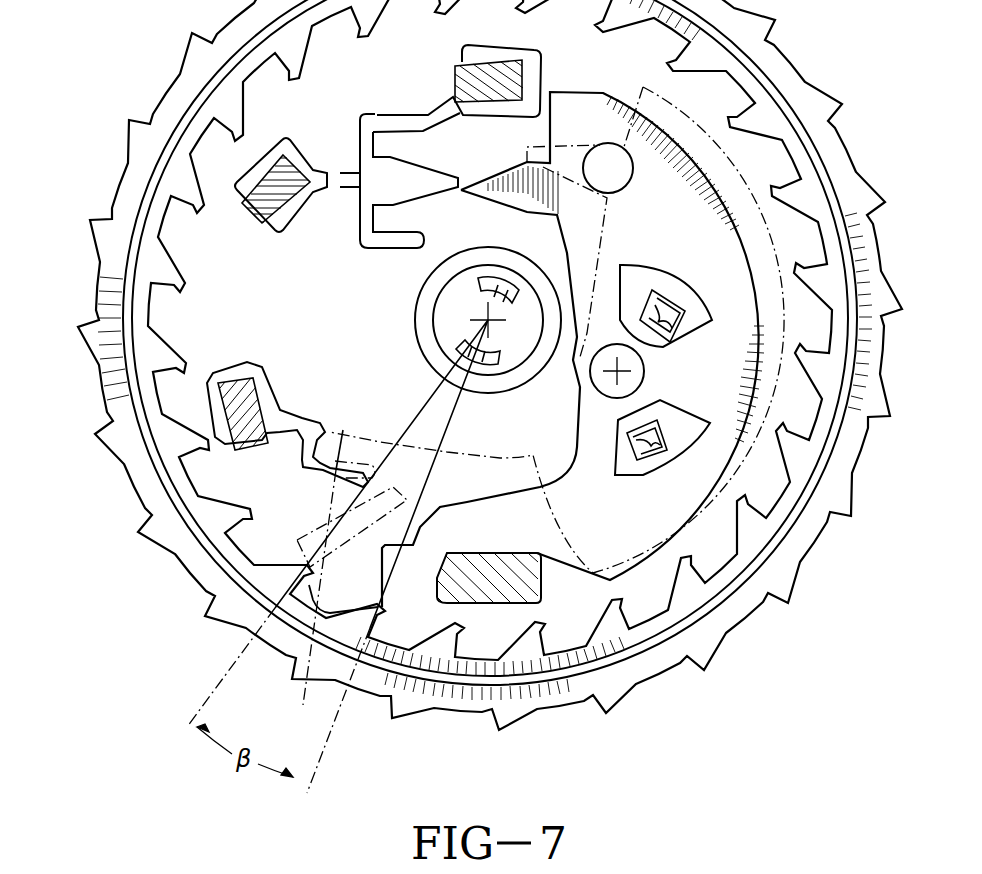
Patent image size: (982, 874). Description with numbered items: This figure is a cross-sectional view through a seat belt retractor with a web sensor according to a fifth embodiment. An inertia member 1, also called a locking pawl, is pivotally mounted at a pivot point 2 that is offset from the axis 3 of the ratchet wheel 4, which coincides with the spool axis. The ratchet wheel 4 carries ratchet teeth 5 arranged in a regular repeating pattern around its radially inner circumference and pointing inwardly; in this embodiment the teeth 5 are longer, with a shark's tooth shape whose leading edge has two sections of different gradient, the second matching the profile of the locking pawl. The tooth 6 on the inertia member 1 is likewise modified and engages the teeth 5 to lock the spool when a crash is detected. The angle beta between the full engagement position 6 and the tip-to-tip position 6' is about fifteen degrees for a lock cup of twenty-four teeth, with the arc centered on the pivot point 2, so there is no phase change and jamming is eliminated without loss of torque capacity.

The inertia member 1 is at (629, 526).
The pivot point 2 is at (624, 366).
The axis 3 is at (488, 320).
The ratchet wheel 4 is at (612, 645).
The ratchet teeth 5 is at (250, 565).
The tooth on the inertia member 6 is at (381, 541).
The tip-to-tip position of the inertia member tooth 6' is at (297, 611).